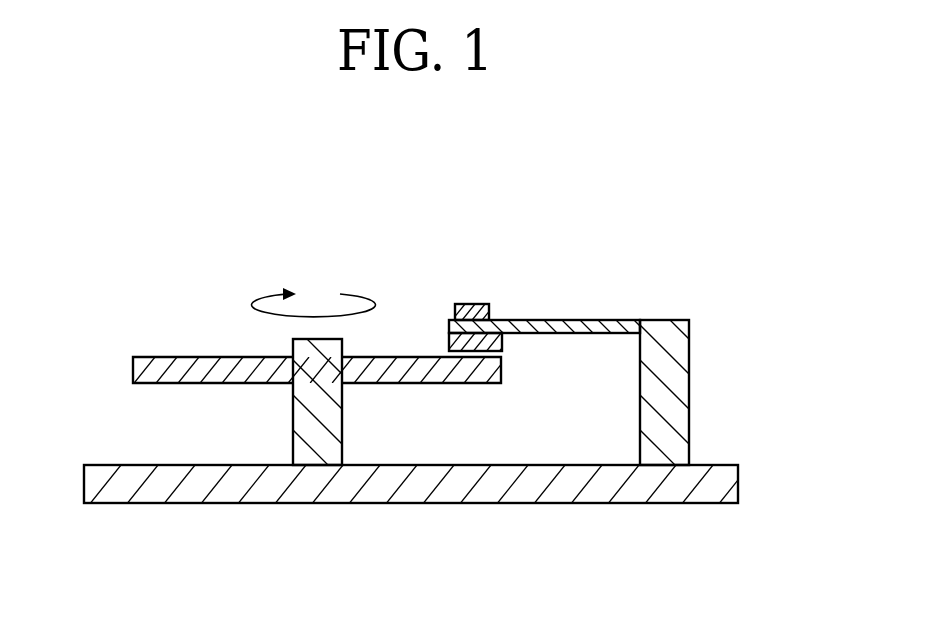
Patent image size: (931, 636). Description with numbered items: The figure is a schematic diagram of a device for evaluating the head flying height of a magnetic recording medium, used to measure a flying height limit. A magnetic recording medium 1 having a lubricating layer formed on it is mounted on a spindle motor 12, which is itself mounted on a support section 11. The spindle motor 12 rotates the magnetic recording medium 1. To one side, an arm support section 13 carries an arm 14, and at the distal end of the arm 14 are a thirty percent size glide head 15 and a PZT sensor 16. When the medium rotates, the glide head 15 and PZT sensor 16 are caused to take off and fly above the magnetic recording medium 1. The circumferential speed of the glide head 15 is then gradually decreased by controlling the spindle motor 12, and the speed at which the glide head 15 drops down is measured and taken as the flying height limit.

The magnetic recording medium 1 is at (320, 323).
The support section 11 is at (420, 533).
The spindle motor 12 is at (370, 470).
The arm support section 13 is at (707, 344).
The arm 14 is at (541, 278).
The glide head 15 is at (480, 273).
The PZT sensor 16 is at (466, 258).